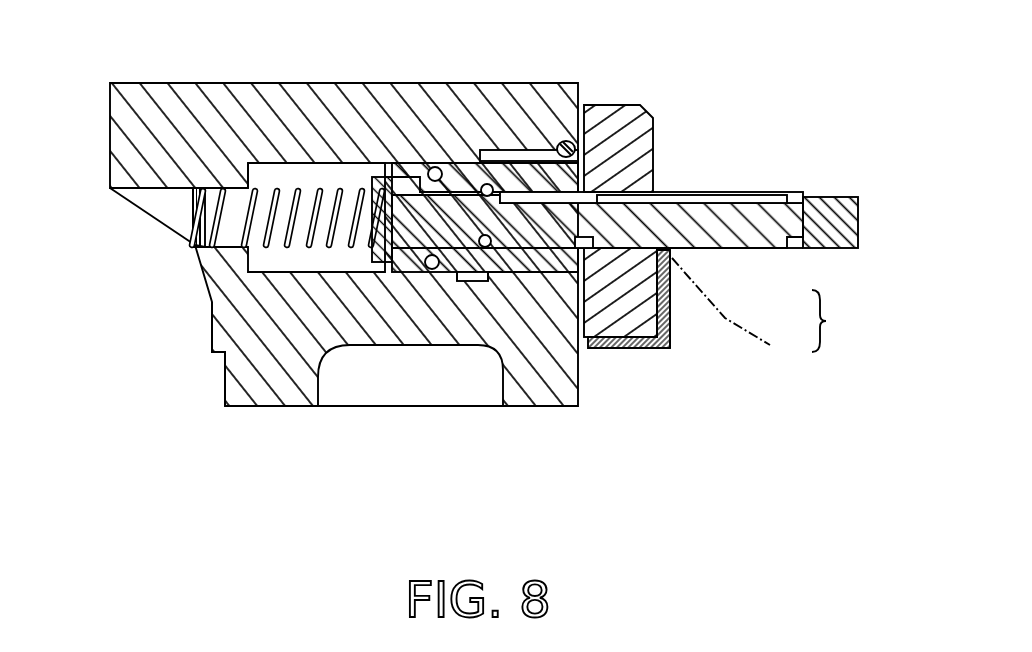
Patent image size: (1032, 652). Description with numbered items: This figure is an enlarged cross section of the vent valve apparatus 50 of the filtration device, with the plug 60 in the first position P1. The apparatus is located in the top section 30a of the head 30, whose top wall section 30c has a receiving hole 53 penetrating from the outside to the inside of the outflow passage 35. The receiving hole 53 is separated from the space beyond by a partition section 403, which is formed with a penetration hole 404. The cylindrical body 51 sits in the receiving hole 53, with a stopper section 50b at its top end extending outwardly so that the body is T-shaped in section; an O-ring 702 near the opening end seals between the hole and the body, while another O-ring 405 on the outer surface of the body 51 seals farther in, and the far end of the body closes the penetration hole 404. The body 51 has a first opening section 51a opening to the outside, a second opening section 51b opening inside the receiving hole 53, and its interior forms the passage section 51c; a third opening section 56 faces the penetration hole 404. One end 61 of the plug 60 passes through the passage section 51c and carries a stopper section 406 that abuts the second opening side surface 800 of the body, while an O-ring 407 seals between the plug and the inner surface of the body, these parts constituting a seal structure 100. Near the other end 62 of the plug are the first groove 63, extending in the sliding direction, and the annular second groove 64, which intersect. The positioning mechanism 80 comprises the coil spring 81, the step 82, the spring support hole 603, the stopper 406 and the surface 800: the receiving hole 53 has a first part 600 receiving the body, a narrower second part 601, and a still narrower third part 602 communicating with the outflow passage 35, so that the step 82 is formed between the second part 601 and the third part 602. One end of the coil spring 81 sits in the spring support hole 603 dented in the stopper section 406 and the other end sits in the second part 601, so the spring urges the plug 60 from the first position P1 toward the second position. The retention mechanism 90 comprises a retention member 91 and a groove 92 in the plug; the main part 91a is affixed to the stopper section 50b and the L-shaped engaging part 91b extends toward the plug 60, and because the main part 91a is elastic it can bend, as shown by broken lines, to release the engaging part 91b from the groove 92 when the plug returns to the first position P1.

The head 30 is at (102, 131).
The top section 30a is at (455, 83).
The top wall section 30c is at (270, 83).
The outflow passage 35 is at (103, 213).
The vent valve apparatus 50 is at (665, 120).
The stopper section 50b is at (626, 104).
The body 51 is at (650, 165).
The first opening section 51a is at (598, 195).
The second opening section 51b is at (428, 270).
The passage section 51c is at (535, 280).
The receiving hole 53 is at (383, 160).
The third opening section 56 is at (465, 282).
The plug 60 is at (838, 192).
The one end 61 is at (393, 250).
The other end 62 is at (840, 218).
The first groove 63 is at (770, 195).
The second groove 64 is at (662, 349).
The positioning mechanism 80 is at (355, 178).
The coil spring 81 is at (283, 188).
The step 82 is at (198, 250).
The retention mechanism 90 is at (835, 321).
The retention member 91 is at (680, 332).
The main part 91a is at (606, 350).
The engaging part 91b is at (672, 268).
The groove 92 is at (795, 248).
The seal structure 100 is at (441, 170).
The partition section 403 is at (268, 320).
The penetration hole 404 is at (487, 290).
The O-ring 405 is at (470, 285).
The stopper section 406 is at (345, 272).
The O-ring 407 is at (489, 182).
The first part 600 is at (312, 292).
The second part 601 is at (205, 188).
The third part 602 is at (178, 213).
The spring support hole 603 is at (372, 180).
The O-ring 702 is at (565, 141).
The second opening side surface 800 is at (393, 190).
The first position P1 is at (860, 247).